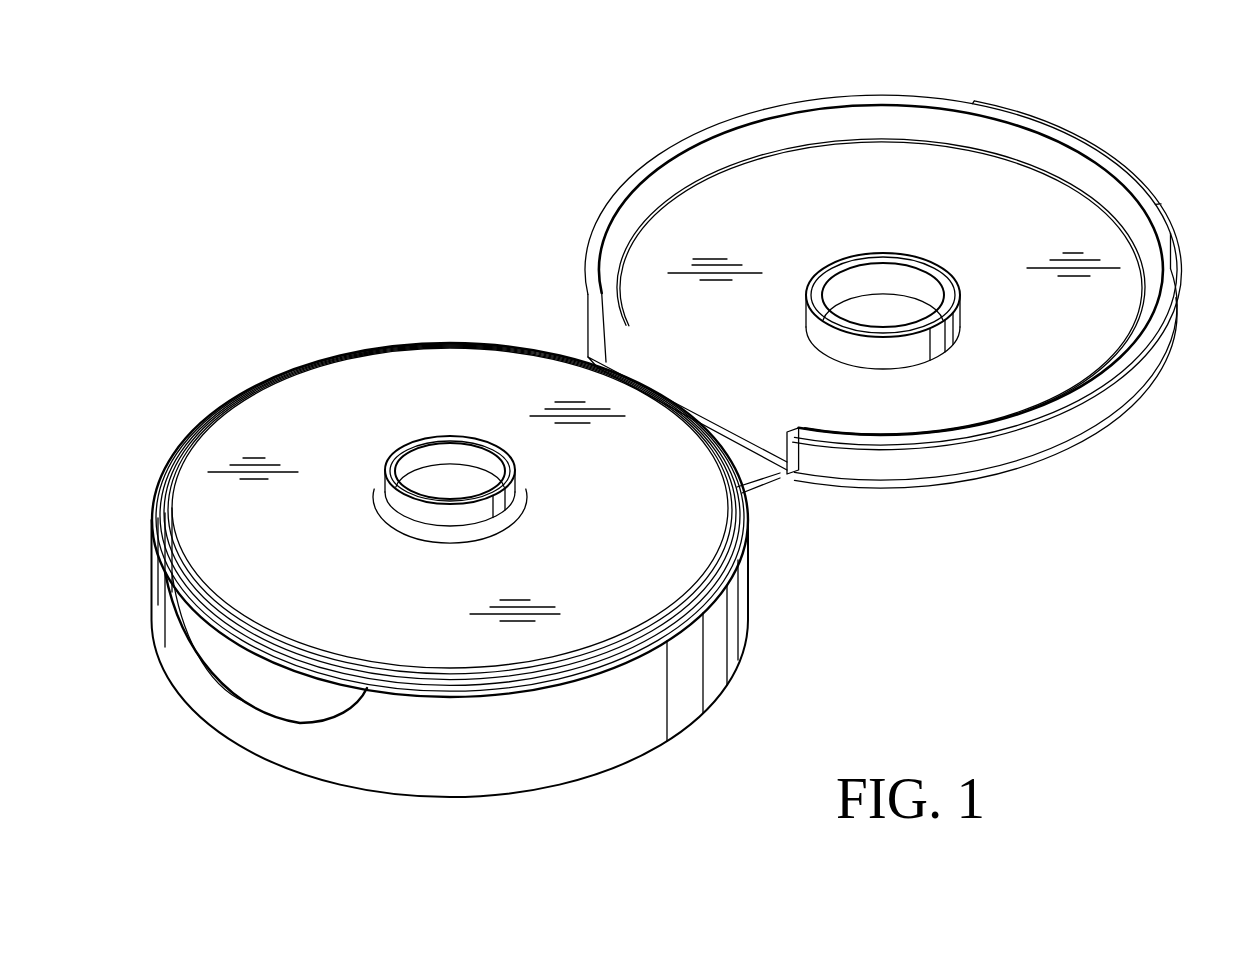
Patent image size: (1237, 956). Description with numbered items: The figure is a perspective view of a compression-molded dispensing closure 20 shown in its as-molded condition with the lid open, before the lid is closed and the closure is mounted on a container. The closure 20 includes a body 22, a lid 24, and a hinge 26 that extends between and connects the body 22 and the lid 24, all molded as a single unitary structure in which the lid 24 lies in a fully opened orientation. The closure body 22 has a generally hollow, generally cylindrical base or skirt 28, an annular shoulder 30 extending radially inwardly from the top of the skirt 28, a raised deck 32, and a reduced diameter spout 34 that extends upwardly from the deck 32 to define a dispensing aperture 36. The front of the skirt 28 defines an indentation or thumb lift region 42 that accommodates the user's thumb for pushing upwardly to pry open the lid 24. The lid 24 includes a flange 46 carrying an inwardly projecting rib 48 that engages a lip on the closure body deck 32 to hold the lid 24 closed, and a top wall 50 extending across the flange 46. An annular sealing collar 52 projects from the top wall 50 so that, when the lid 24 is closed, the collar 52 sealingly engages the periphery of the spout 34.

The closure 20 is at (368, 163).
The body 22 is at (258, 368).
The lid 24 is at (710, 114).
The hinge 26 is at (771, 491).
The skirt 28 is at (577, 765).
The annular shoulder 30 is at (750, 547).
The raised deck 32 is at (424, 648).
The spout 34 is at (414, 441).
The dispensing aperture 36 is at (470, 458).
The thumb lift region 42 is at (247, 687).
The flange 46 is at (1143, 378).
The rib 48 is at (805, 117).
The top wall 50 is at (1053, 204).
The annular sealing collar 52 is at (882, 355).